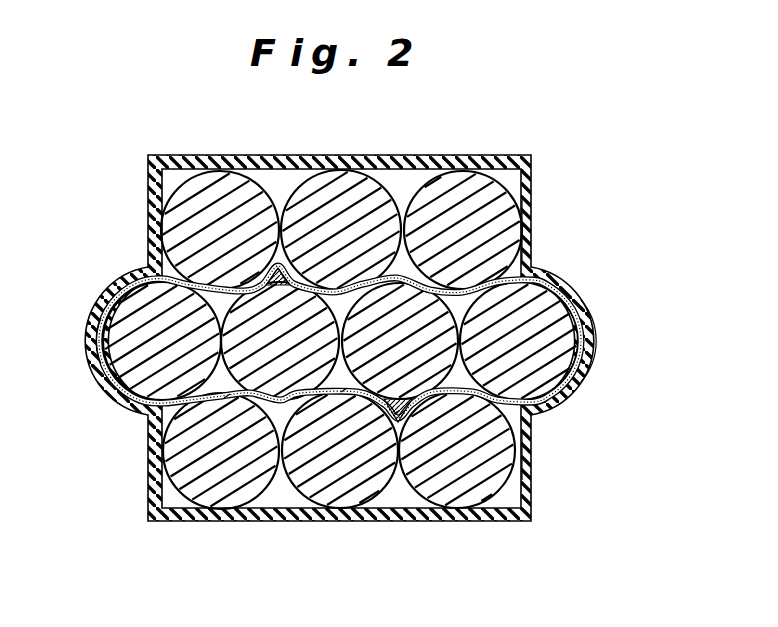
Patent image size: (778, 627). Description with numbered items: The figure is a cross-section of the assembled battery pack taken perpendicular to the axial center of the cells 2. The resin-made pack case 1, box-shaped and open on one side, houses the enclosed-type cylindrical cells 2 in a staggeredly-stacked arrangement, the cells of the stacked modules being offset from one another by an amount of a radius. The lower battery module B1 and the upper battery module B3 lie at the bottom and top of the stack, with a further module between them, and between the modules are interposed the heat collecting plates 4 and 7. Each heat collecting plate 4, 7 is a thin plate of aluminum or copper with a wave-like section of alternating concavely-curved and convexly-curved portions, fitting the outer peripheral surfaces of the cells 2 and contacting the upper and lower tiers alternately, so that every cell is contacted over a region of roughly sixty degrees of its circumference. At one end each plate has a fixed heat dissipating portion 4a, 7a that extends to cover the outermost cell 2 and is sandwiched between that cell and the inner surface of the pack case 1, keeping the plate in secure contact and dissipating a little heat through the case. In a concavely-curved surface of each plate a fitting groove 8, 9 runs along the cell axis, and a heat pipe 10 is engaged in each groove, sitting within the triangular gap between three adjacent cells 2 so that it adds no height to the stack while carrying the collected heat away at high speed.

The pack case 1 is at (480, 158).
The cell 2 is at (333, 210).
The heat collecting plate 4 is at (381, 412).
The fixed heat dissipating portion 4a is at (586, 330).
The heat collecting plate 7 is at (427, 283).
The fixed heat dissipating portion 7a is at (90, 352).
The fitting groove 8 is at (441, 415).
The fitting groove 9 is at (226, 396).
The heat pipe 10 is at (344, 390).
The lower battery module B1 is at (533, 452).
The upper battery module B3 is at (533, 228).